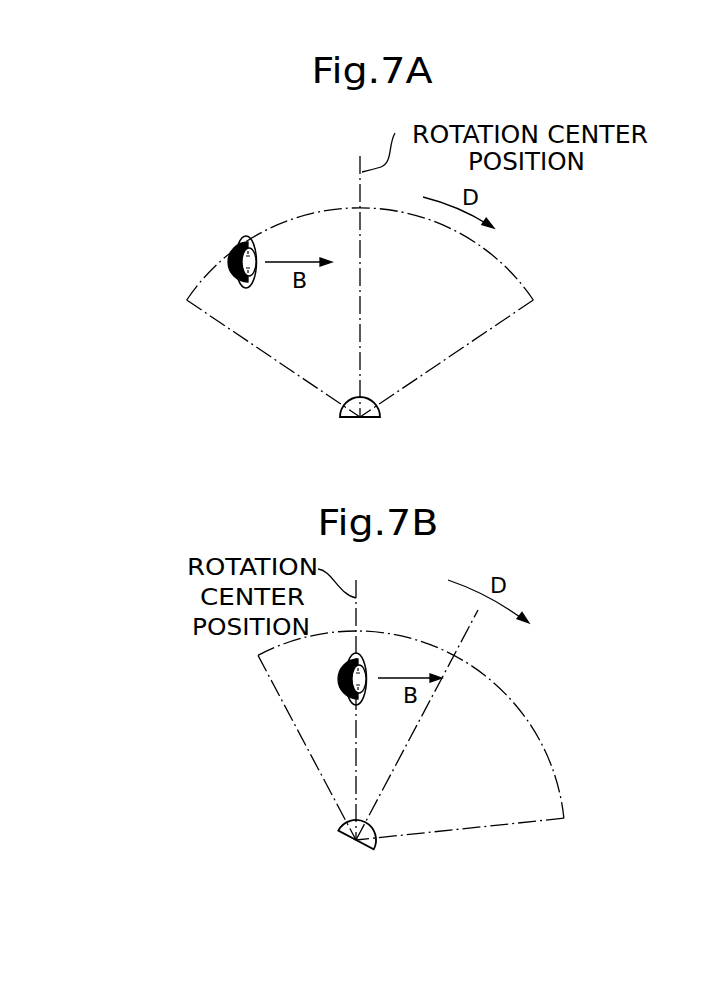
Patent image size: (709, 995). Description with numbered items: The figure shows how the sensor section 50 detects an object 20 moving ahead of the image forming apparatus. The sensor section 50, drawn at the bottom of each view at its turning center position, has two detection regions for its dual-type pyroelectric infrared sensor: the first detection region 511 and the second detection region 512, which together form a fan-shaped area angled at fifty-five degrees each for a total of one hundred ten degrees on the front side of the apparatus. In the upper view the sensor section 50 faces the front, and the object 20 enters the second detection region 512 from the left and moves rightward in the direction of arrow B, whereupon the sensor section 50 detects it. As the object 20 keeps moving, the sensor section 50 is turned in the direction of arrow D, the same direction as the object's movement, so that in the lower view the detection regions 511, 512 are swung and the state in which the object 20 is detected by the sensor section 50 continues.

In FIG. 7A, the object 20 is at (237, 240).
In FIG. 7B, the object 20 is at (348, 662).
In FIG. 7A, the sensor section 50 is at (380, 410).
In FIG. 7B, the sensor section 50 is at (338, 831).
In FIG. 7A, the first detection region 511 is at (495, 257).
In FIG. 7B, the first detection region 511 is at (527, 720).
In FIG. 7A, the second detection region 512 is at (311, 215).
In FIG. 7B, the second detection region 512 is at (398, 638).